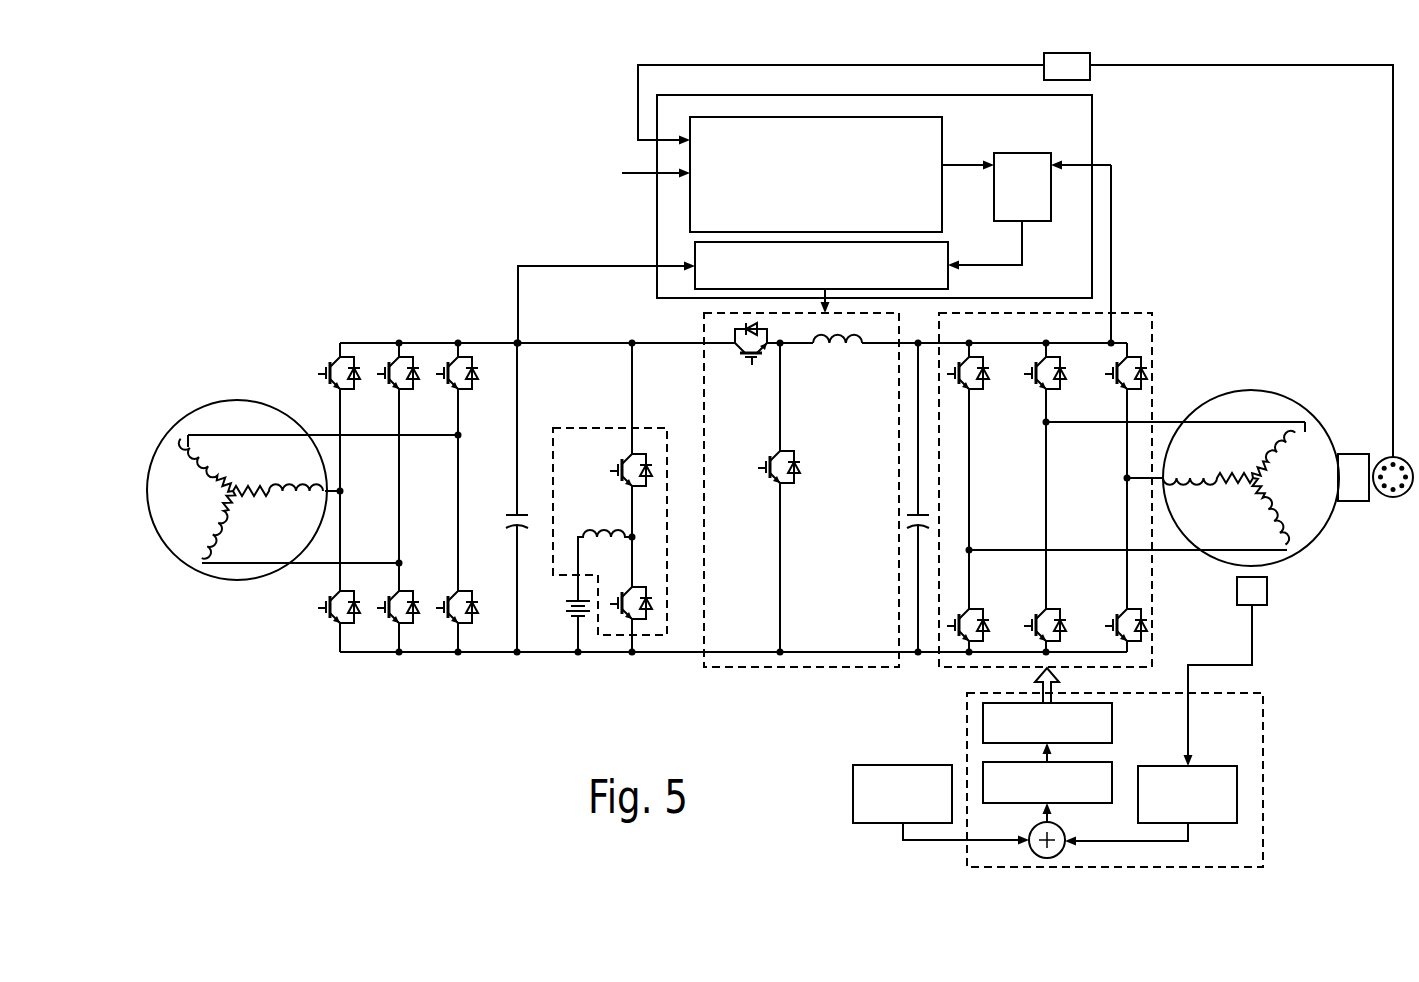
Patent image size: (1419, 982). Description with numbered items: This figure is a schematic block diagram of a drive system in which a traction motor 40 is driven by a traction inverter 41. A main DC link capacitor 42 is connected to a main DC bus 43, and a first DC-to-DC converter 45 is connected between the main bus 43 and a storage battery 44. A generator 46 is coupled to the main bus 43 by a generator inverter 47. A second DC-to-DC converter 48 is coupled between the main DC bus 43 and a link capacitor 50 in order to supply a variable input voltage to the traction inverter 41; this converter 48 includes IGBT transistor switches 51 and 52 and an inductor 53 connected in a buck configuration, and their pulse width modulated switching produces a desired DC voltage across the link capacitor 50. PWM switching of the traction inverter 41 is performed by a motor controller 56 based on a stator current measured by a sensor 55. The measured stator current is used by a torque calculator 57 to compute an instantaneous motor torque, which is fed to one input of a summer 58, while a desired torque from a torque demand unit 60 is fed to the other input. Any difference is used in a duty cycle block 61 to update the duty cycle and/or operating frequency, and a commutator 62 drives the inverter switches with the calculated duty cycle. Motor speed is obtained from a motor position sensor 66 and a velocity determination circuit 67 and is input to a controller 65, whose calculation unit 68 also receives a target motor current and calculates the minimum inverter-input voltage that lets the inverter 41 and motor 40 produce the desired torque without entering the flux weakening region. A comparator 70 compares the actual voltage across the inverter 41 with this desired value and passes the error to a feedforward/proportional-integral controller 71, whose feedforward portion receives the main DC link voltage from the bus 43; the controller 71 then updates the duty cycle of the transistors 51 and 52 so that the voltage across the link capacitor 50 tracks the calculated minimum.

The traction motor 40 is at (1250, 389).
The traction inverter 41 is at (1158, 322).
The main DC link capacitor 42 is at (514, 514).
The main DC bus 43 is at (580, 342).
The storage battery 44 is at (573, 622).
The first DC-to-DC converter 45 is at (588, 427).
The generator 46 is at (231, 400).
The generator inverter 47 is at (398, 338).
The second DC-to-DC converter 48 is at (735, 668).
The link capacitor 50 is at (914, 518).
The IGBT transistor switch 51 is at (796, 482).
The IGBT transistor switch 52 is at (764, 360).
The inductor 53 is at (842, 352).
The sensor 55 is at (1267, 590).
The motor controller 56 is at (1263, 718).
The torque calculator 57 is at (1237, 792).
The summer 58 is at (1062, 827).
The torque demand unit 60 is at (853, 790).
The duty cycle block 61 is at (1112, 780).
The commutator 62 is at (983, 720).
The controller 65 is at (1092, 128).
The motor position sensor 66 is at (1390, 498).
The velocity determination circuit 67 is at (1090, 73).
The calculation unit 68 is at (842, 174).
The comparator 70 is at (1015, 152).
The feedforward/proportional-integral controller 71 is at (695, 252).